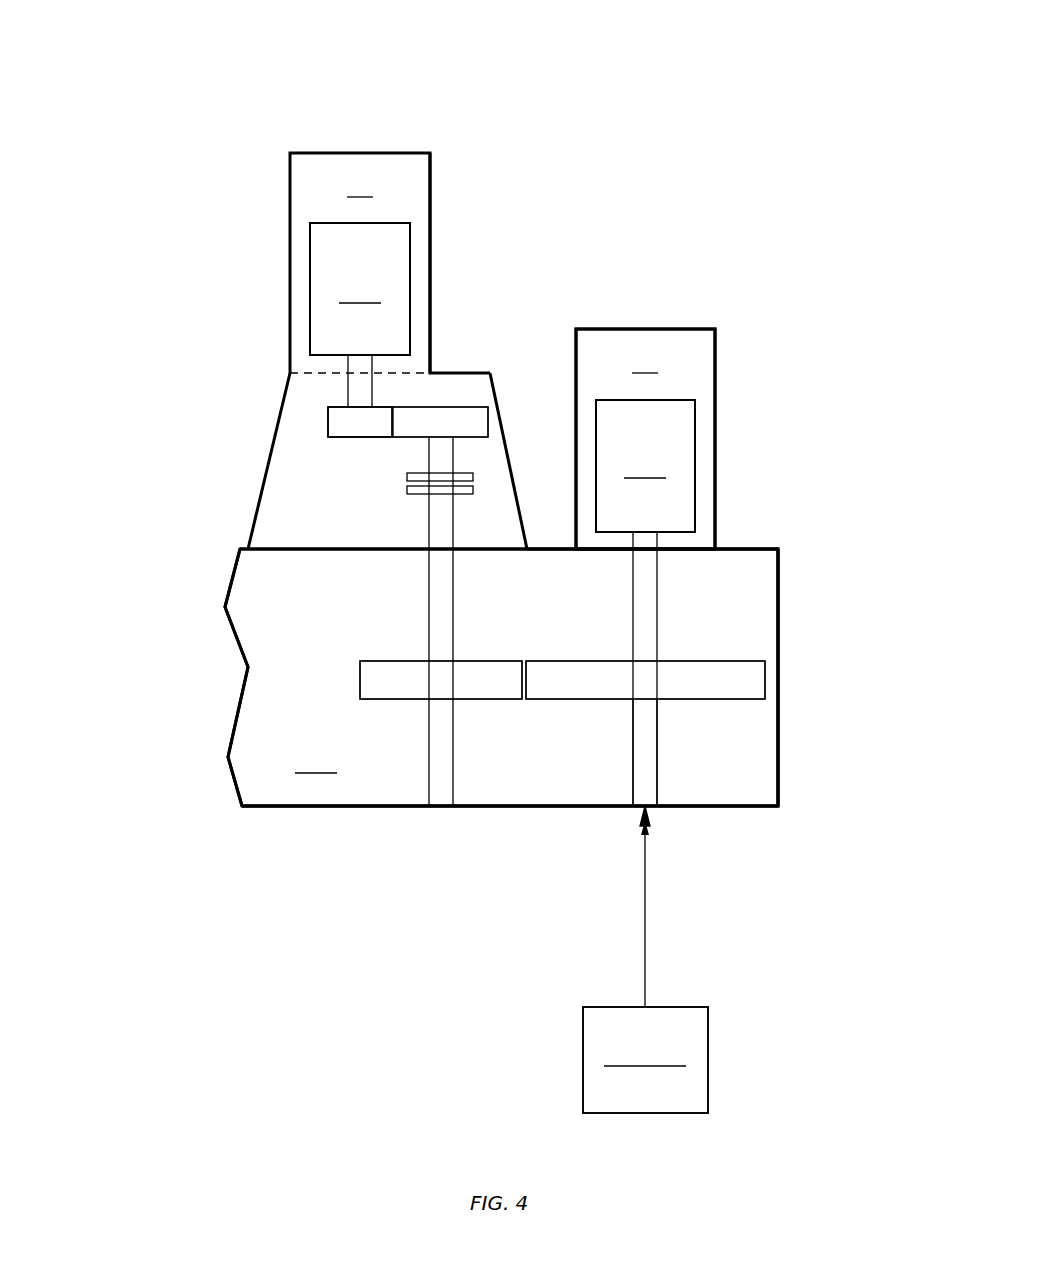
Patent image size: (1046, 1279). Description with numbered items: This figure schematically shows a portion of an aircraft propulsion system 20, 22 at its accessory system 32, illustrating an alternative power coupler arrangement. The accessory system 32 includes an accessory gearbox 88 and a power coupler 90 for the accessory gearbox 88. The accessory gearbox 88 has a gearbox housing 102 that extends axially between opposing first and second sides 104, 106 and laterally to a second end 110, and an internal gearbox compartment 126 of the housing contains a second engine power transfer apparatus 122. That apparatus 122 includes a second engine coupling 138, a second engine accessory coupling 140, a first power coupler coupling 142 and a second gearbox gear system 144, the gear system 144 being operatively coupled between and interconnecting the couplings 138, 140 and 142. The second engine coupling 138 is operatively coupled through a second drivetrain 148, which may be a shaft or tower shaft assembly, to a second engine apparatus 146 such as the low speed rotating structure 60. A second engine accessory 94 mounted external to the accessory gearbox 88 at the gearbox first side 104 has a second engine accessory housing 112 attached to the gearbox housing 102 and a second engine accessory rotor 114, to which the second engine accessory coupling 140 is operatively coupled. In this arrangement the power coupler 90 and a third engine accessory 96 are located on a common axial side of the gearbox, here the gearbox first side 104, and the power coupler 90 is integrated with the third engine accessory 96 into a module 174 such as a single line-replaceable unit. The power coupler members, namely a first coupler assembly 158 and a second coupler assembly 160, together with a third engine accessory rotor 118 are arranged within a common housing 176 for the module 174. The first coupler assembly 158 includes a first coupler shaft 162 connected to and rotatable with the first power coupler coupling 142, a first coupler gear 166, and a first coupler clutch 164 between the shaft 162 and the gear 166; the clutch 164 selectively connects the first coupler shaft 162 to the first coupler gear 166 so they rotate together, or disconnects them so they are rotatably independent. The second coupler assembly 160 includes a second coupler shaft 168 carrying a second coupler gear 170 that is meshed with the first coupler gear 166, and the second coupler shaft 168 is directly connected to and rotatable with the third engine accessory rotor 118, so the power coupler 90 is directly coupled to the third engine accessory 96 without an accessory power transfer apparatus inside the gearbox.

The gas turbine engine 20 is at (214, 72).
The propulsion system 22 is at (214, 72).
The accessory system 32 is at (771, 128).
The low speed rotating structure 60 is at (645, 1060).
The accessory gearbox 88 is at (809, 649).
The power coupler 90 is at (243, 509).
The second engine accessory 94 is at (645, 439).
The third engine accessory 96 is at (403, 260).
The gearbox housing 102 is at (787, 589).
The gearbox first side 104 is at (750, 549).
The gearbox second side 106 is at (752, 806).
The gearbox second end 110 is at (780, 782).
The second engine accessory housing 112 is at (676, 328).
The second engine accessory rotor 114 is at (645, 466).
The third engine accessory rotor 118 is at (360, 289).
The second engine power transfer apparatus 122 is at (744, 643).
The internal gearbox compartment 126 is at (281, 677).
The second engine coupling 138 is at (657, 803).
The second engine accessory coupling 140 is at (657, 552).
The first power coupler coupling 142 is at (455, 552).
The second gearbox gear system 144 is at (771, 681).
The second engine apparatus 146 is at (645, 1060).
The second drivetrain 148 is at (648, 930).
The first coupler assembly 158 is at (476, 400).
The second coupler assembly 160 is at (309, 417).
The first coupler shaft 162 is at (428, 520).
The first coupler clutch 164 is at (393, 489).
The first coupler gear 166 is at (442, 405).
The second coupler shaft 168 is at (348, 402).
The second coupler gear 170 is at (372, 438).
The module 174 is at (258, 232).
The common housing 176 is at (432, 182).